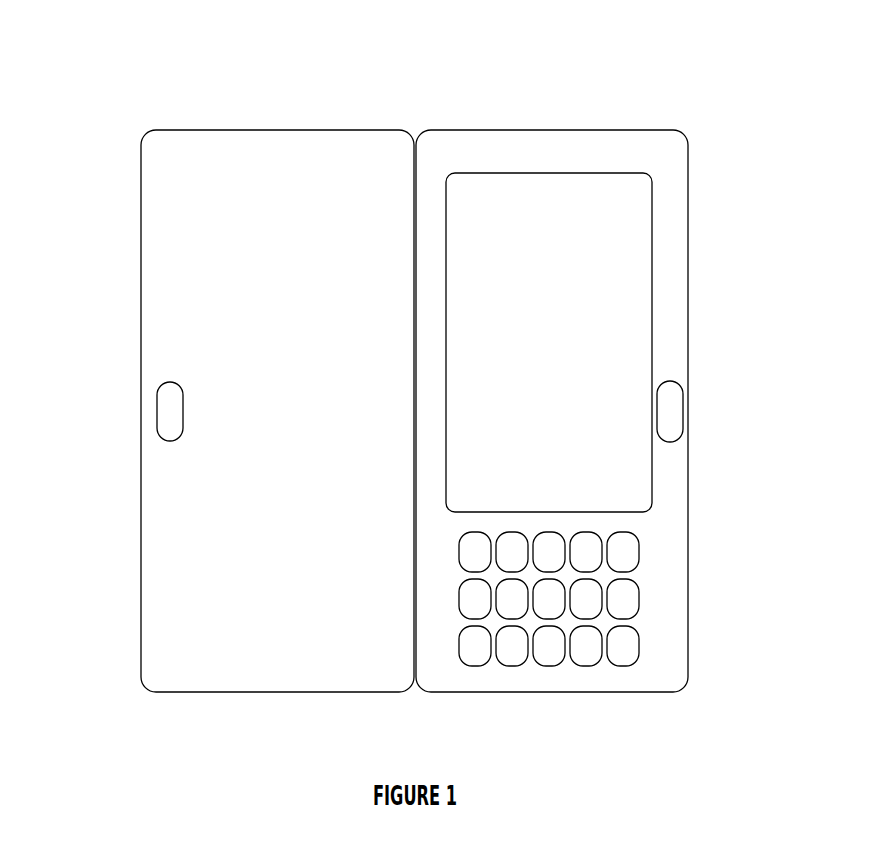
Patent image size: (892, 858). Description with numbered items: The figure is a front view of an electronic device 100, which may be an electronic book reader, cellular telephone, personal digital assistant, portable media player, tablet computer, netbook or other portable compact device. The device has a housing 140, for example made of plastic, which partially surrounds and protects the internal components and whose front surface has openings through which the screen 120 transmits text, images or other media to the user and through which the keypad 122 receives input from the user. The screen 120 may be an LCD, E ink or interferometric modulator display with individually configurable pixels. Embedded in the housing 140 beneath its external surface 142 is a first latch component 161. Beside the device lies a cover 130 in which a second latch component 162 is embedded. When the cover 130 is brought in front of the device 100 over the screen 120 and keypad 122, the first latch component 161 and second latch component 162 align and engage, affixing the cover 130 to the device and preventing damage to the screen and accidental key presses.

The electronic device 100 is at (631, 103).
The screen 120 is at (653, 192).
The keypad 122 is at (638, 643).
The cover 130 is at (142, 202).
The housing 140 is at (677, 250).
The external surface 142 is at (678, 306).
The first latch component 161 is at (683, 392).
The second latch component 162 is at (158, 409).